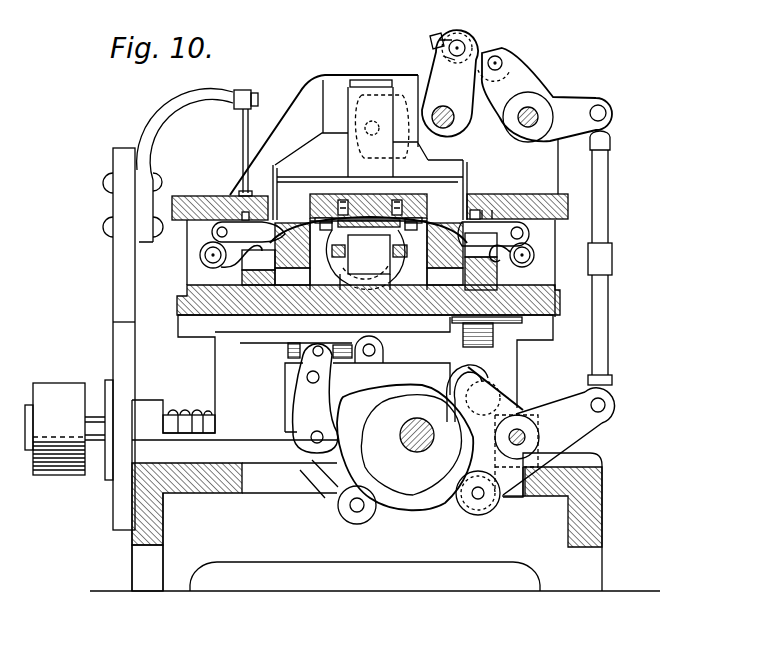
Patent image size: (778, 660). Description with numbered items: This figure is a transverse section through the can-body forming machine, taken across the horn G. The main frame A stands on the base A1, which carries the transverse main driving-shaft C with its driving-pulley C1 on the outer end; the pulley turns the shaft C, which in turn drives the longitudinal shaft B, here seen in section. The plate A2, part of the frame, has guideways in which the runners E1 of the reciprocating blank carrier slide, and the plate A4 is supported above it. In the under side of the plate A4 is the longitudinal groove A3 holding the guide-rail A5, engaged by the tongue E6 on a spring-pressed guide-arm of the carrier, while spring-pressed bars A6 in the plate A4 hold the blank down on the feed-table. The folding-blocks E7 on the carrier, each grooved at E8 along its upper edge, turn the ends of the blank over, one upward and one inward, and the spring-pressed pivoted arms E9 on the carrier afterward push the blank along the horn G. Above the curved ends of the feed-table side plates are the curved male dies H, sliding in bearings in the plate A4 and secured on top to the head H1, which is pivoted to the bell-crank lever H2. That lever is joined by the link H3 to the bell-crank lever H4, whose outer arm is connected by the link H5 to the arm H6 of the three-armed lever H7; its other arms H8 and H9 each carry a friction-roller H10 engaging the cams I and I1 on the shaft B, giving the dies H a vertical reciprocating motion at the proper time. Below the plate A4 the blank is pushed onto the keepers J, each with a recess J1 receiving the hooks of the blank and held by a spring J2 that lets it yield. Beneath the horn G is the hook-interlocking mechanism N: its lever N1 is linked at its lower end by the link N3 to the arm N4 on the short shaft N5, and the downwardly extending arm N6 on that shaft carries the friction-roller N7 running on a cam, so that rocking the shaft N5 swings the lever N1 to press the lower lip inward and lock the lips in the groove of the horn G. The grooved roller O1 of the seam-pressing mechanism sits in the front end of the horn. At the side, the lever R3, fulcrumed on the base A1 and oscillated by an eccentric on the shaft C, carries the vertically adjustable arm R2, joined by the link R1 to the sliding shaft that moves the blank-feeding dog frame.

The main frame A is at (345, 365).
The base A1 is at (367, 522).
The plate A2 is at (247, 308).
The longitudinally-extending groove A3 is at (282, 158).
The plate A4 is at (213, 185).
The rail A5 is at (243, 195).
The spring-pressed bars A6 is at (340, 200).
The longitudinally-extending shaft B is at (421, 450).
The main driving-shaft C is at (91, 413).
The driving-pulley C1 is at (55, 415).
The runner E1 is at (520, 281).
The tongue E6 is at (327, 255).
The folding-blocks E7 is at (413, 234).
The groove E8 is at (322, 234).
The spring-pressed pivoted arms E9 is at (405, 256).
The horn G is at (365, 255).
The curved dies H is at (372, 182).
The head H1 is at (328, 128).
The bell-crank lever H2 is at (442, 83).
The link H3 is at (481, 52).
The bell-crank lever H4 is at (545, 95).
The link H5 is at (612, 278).
The arm H6 is at (567, 400).
The three-armed lever H7 is at (558, 372).
The arm H8 is at (493, 390).
The arm H9 is at (504, 500).
The friction-roller H10 is at (472, 364).
The cam I is at (410, 505).
The cam I1 is at (442, 477).
The keepers J is at (215, 233).
The recess J1 is at (339, 256).
The spring J2 is at (212, 279).
The lip or hook interlocking mechanism N is at (322, 398).
The lever N1 is at (386, 349).
The link N3 is at (300, 352).
The arm N4 is at (308, 391).
The short shaft N5 is at (314, 438).
The downwardly-extending arm N6 is at (340, 483).
The friction-roller N7 is at (360, 518).
The grooved roller O1 is at (492, 343).
The link R1 is at (251, 123).
The arm R2 is at (197, 158).
The lever R3 is at (120, 275).